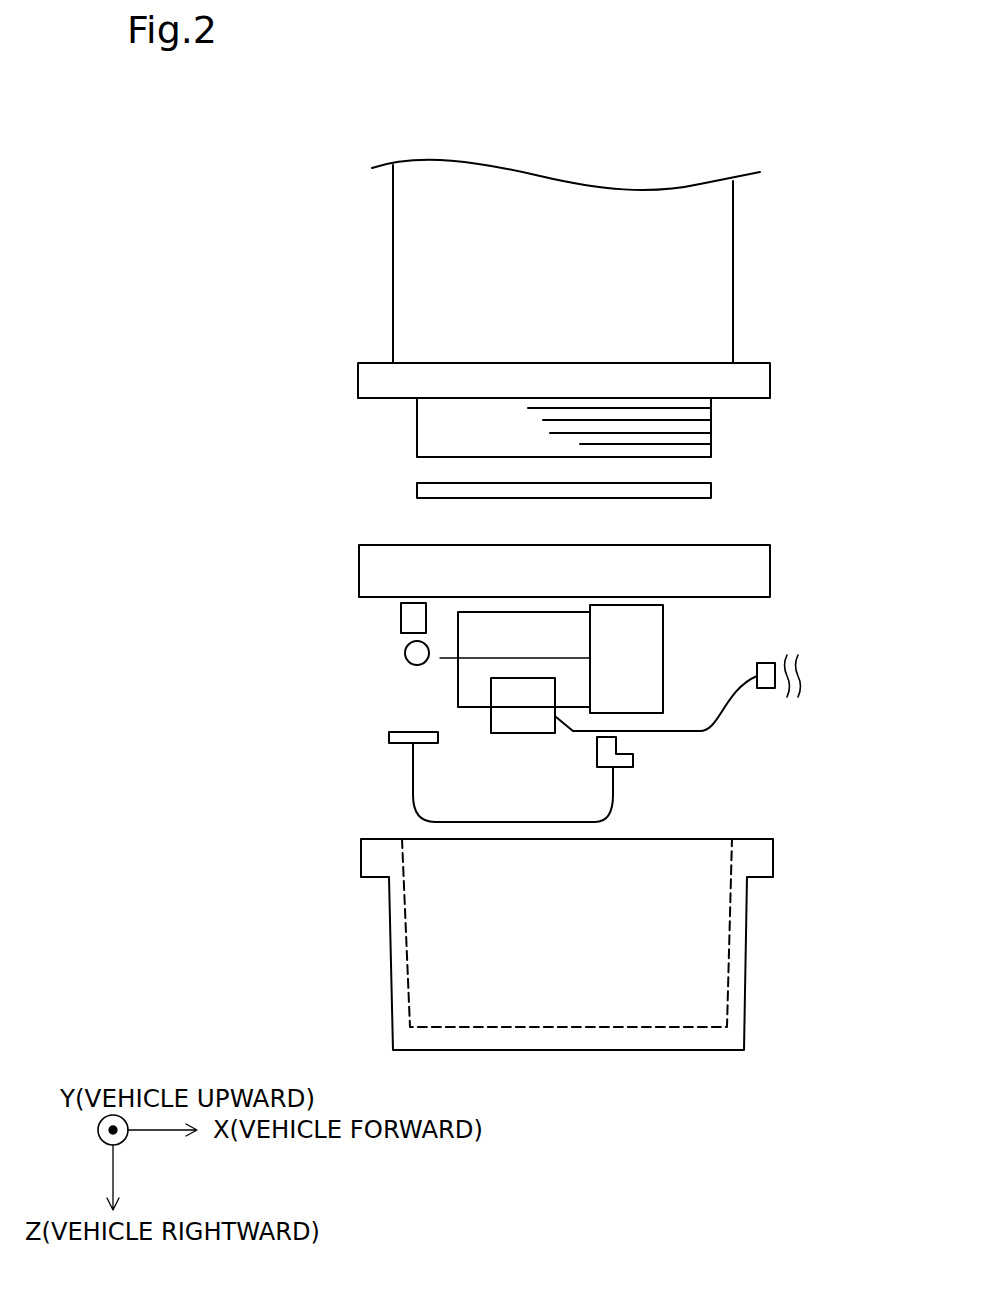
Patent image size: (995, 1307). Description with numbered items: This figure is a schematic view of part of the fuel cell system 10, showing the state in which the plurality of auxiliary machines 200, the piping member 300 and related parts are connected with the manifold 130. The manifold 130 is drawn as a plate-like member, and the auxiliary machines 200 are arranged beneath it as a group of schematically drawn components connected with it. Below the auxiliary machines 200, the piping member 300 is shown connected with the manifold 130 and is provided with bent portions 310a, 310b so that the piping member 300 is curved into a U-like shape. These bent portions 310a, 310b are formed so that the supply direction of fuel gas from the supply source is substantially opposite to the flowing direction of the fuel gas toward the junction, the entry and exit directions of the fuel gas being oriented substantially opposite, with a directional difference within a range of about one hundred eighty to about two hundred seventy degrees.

The fuel cell system 10 is at (756, 121).
The manifold 130 is at (792, 558).
The auxiliary machines 200 is at (397, 602).
The piping member 300 is at (513, 779).
The bent portion 310a is at (415, 812).
The bent portion 310b is at (617, 808).